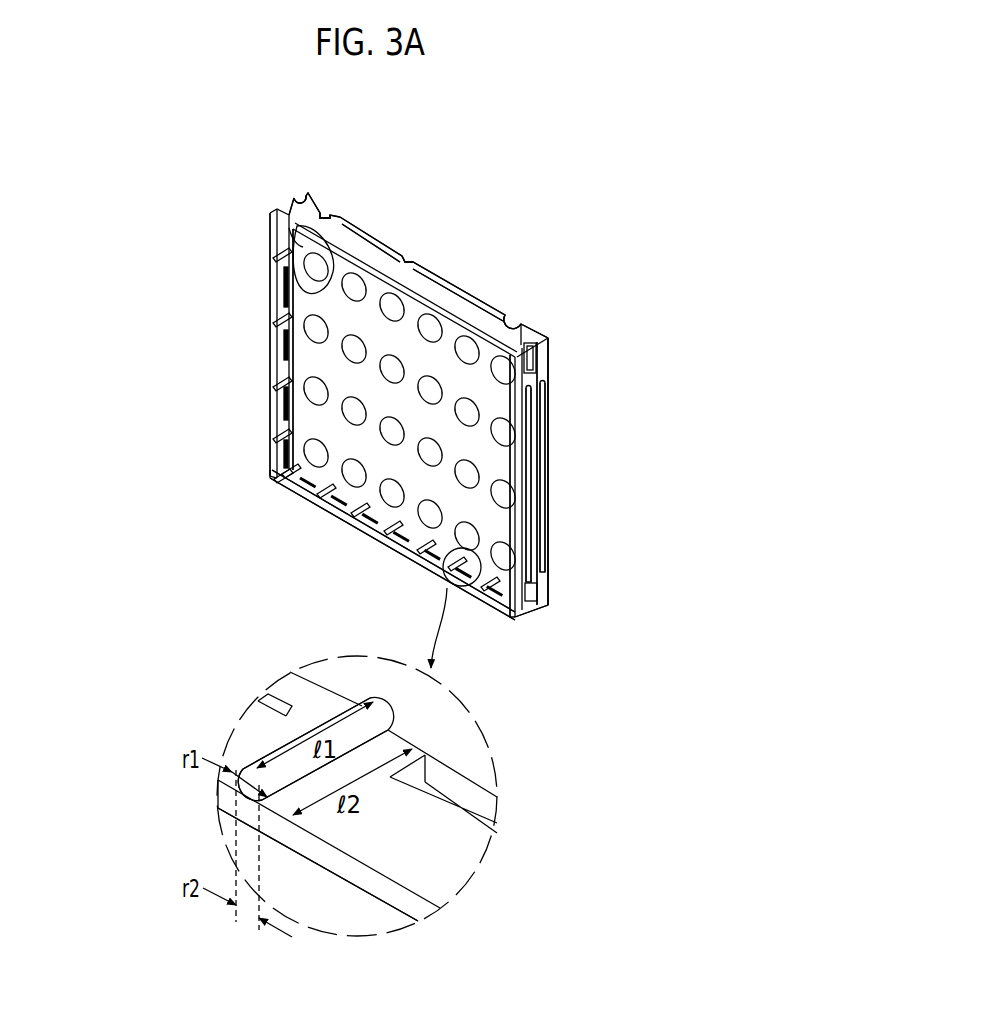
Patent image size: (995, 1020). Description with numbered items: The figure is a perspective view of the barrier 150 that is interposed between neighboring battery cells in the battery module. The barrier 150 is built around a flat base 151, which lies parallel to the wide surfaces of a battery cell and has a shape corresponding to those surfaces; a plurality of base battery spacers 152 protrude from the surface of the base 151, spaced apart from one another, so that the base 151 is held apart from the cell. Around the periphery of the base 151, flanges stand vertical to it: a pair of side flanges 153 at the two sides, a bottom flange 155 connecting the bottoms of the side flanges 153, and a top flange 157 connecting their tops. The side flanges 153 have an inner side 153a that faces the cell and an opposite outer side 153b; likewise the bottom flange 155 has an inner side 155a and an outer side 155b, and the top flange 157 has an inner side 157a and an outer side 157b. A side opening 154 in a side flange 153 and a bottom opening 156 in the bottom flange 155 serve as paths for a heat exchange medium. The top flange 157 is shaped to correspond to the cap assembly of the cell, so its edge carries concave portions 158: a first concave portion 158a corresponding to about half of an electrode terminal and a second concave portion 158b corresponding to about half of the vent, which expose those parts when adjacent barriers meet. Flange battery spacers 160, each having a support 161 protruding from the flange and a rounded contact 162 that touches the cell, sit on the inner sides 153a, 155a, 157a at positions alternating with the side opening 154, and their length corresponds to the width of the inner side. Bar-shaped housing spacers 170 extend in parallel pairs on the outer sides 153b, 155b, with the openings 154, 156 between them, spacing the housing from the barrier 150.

The barrier 150 is at (558, 203).
The base 151 is at (310, 432).
The base battery spacer 152 is at (310, 405).
The side flange 153 is at (147, 287).
The inner side of side flange 153a is at (277, 297).
The outer side of side flange 153b is at (268, 357).
The side opening 154 is at (290, 232).
The bottom flange 155 is at (180, 507).
The inner side of bottom flange 155a is at (287, 487).
The outer side of bottom flange 155b is at (303, 497).
The bottom opening 156 is at (447, 555).
The top flange 157 is at (300, 138).
The inner side of top flange 157a is at (299, 213).
The outer side of top flange 157b is at (307, 215).
The concave portion 158 is at (438, 118).
The first concave portion 158a is at (330, 208).
The second concave portion 158b is at (423, 268).
The flange battery spacer 160 is at (280, 390).
The support 161 is at (219, 797).
The rounded contact 162 is at (238, 763).
The housing spacer 170 is at (543, 525).